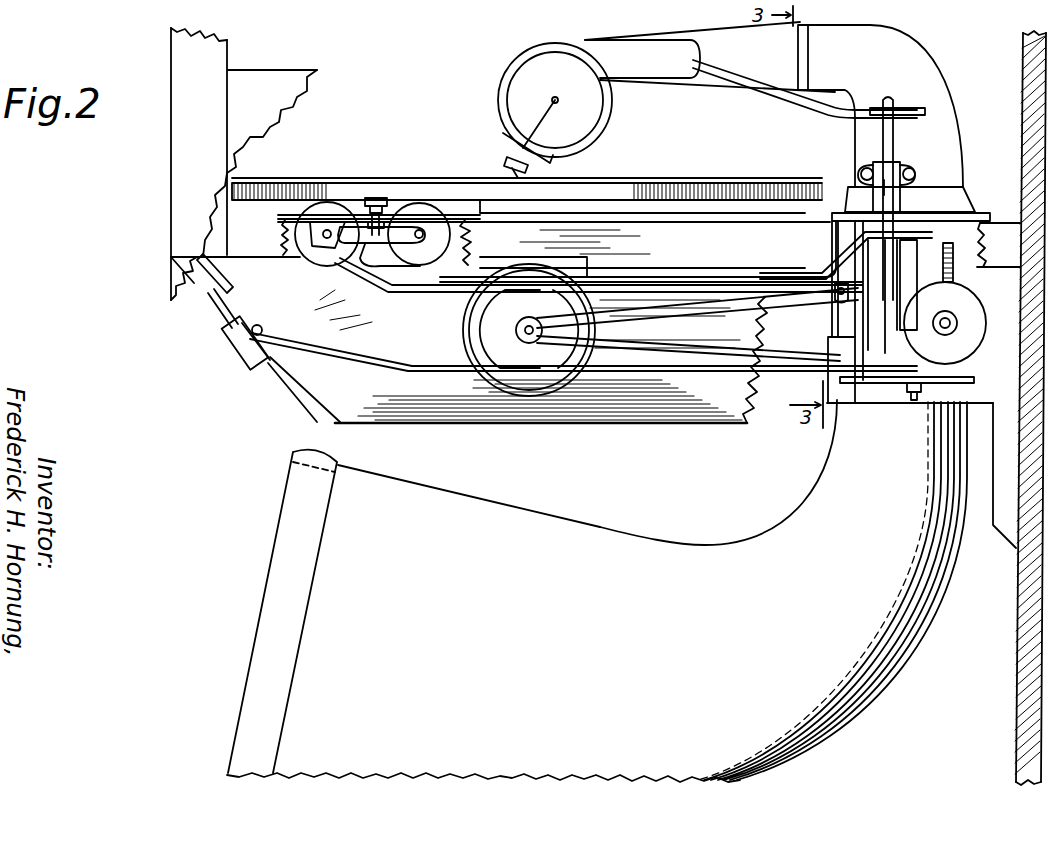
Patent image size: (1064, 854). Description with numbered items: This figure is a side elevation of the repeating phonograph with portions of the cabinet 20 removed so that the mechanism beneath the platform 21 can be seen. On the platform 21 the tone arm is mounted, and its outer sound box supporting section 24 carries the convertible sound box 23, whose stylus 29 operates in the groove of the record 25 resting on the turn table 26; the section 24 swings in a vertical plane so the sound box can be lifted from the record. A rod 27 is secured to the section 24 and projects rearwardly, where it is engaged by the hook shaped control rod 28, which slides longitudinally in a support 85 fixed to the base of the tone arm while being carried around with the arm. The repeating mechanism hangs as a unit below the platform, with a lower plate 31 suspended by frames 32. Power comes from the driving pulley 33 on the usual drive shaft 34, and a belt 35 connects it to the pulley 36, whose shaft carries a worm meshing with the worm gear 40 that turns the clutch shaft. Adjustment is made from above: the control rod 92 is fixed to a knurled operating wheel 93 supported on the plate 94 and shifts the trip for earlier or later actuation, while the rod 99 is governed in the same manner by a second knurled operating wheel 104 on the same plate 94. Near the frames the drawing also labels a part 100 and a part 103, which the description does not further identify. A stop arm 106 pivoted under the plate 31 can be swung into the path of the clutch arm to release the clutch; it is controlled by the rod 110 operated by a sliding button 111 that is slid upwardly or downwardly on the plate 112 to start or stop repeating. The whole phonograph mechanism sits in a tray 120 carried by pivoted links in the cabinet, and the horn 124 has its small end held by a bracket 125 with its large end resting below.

The cabinet 20 is at (1020, 627).
The platform 21 is at (246, 272).
The sound box 23 is at (500, 92).
The outer sound box supporting section 24 is at (642, 72).
The record 25 is at (694, 183).
The turn table 26 is at (793, 185).
The rod 27 is at (781, 97).
The hook shaped control rod 28 is at (896, 137).
The stylus 29 is at (507, 166).
The lower plate 31 is at (960, 388).
The frames 32 is at (960, 245).
The driving pulley 33 is at (600, 325).
The drive shaft 34 is at (525, 327).
The belt 35 is at (701, 349).
The pulley 36 is at (976, 324).
The worm gear 40 is at (958, 291).
The support 85 is at (900, 170).
The control rod 92 is at (717, 272).
The knurled operating wheel 93 is at (409, 250).
The plate 94 is at (389, 198).
The rod 99 is at (378, 291).
The hinge 100 is at (835, 293).
The pipe 103 is at (835, 240).
The knurled operating wheel 104 is at (306, 258).
The stop arm 106 is at (912, 388).
The rod 110 is at (390, 368).
The sliding button 111 is at (245, 358).
The plate 112 is at (225, 325).
The tray 120 is at (624, 425).
The horn 124 is at (531, 520).
The bracket 125 is at (828, 435).